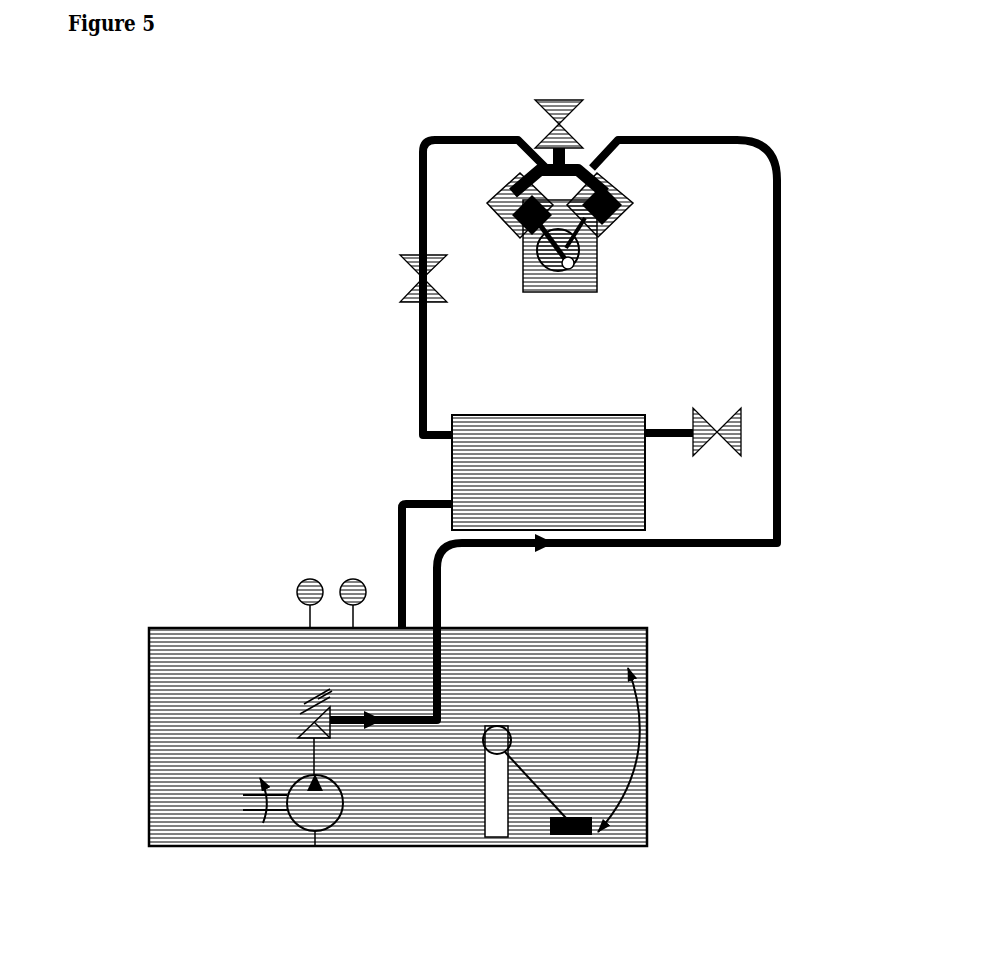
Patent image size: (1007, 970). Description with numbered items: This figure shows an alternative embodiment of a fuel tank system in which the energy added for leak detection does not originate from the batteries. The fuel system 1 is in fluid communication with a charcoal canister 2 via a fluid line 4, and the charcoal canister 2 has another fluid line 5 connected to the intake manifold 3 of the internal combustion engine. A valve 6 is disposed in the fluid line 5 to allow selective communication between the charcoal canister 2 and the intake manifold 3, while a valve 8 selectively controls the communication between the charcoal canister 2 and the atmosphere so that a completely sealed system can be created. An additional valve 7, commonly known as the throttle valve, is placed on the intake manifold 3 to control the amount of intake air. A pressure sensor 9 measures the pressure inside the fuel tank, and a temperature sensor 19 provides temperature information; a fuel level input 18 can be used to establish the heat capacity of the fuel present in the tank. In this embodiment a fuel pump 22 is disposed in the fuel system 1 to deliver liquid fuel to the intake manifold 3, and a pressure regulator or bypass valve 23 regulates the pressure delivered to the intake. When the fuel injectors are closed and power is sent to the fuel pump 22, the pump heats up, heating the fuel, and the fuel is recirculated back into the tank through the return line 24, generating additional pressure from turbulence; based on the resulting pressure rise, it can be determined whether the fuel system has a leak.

The fuel system 1 is at (207, 624).
The charcoal canister 2 is at (448, 470).
The intake manifold 3 is at (586, 162).
The fluid line 4 is at (396, 557).
The fluid line 5 is at (412, 185).
The valve 6 is at (402, 281).
The throttle valve 7 is at (539, 123).
The valve 8 is at (680, 419).
The pressure sensor 9 is at (297, 579).
The fuel level input 18 is at (526, 790).
The temperature sensor 19 is at (343, 573).
The fuel pump 22 is at (289, 813).
The pressure regulator or bypass valve 23 is at (290, 716).
The return line 24 is at (677, 550).